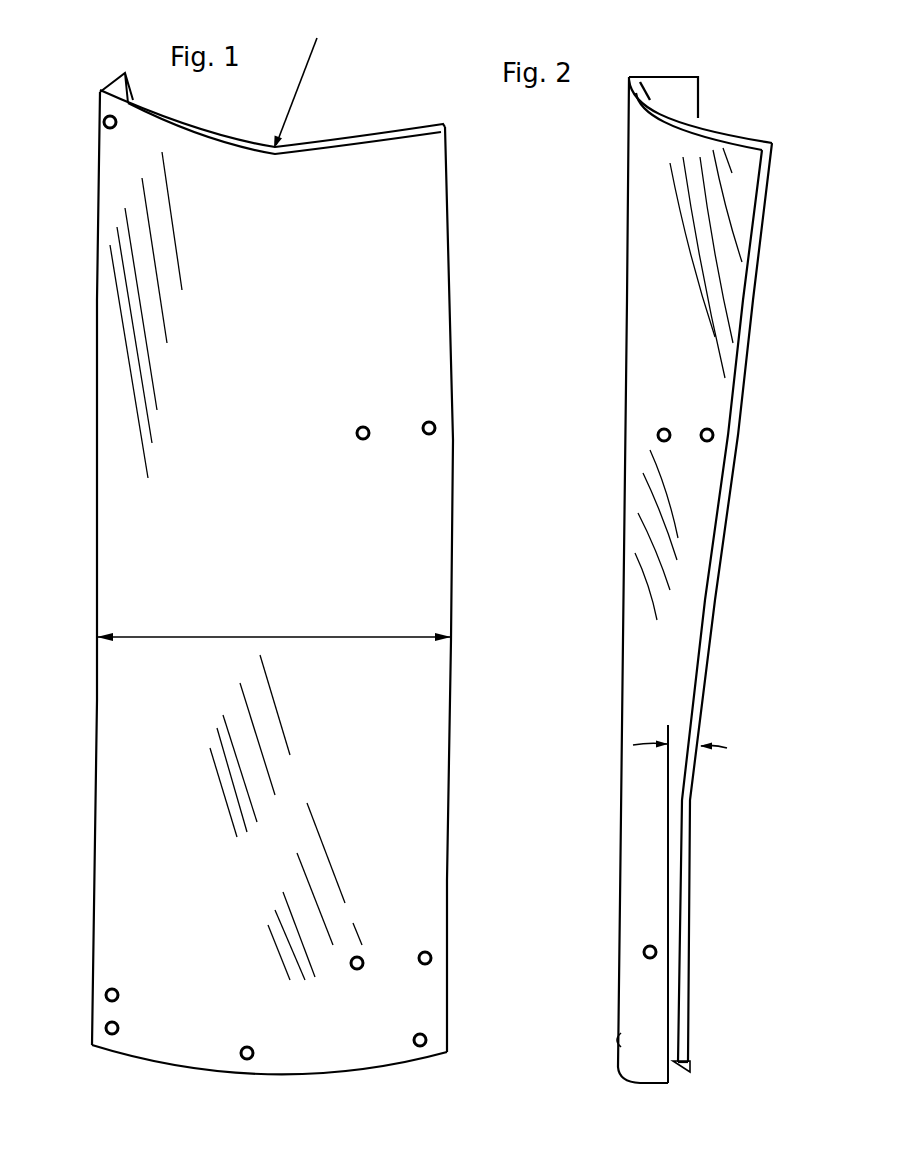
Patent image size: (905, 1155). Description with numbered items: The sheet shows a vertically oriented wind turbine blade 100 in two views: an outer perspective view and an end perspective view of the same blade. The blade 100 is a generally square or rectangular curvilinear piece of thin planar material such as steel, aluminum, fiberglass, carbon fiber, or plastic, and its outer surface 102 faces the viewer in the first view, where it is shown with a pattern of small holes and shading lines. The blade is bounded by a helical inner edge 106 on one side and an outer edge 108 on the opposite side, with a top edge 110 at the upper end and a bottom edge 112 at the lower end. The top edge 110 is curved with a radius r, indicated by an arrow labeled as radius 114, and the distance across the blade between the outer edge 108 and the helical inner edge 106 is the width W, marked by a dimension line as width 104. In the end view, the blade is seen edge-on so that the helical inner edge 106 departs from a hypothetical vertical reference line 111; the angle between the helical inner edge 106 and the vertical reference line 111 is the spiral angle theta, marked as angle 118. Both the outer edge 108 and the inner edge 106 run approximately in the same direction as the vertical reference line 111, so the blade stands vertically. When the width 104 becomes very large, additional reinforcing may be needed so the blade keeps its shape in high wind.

In FIG. 1, the blade 100 is at (272, 578).
In FIG. 2, the blade 100 is at (679, 545).
In FIG. 1, the outer surface 102 is at (428, 398).
In FIG. 1, the width 104 is at (290, 620).
In FIG. 1, the helical inner edge 106 is at (452, 565).
In FIG. 2, the helical inner edge 106 is at (722, 538).
In FIG. 1, the outer edge 108 is at (97, 595).
In FIG. 1, the top edge 110 is at (373, 135).
In FIG. 2, the vertical reference line 111 is at (668, 840).
In FIG. 1, the bottom edge 112 is at (357, 1068).
In FIG. 1, the radius r 114 is at (307, 73).
In FIG. 2, the spiral angle theta 118 is at (678, 757).